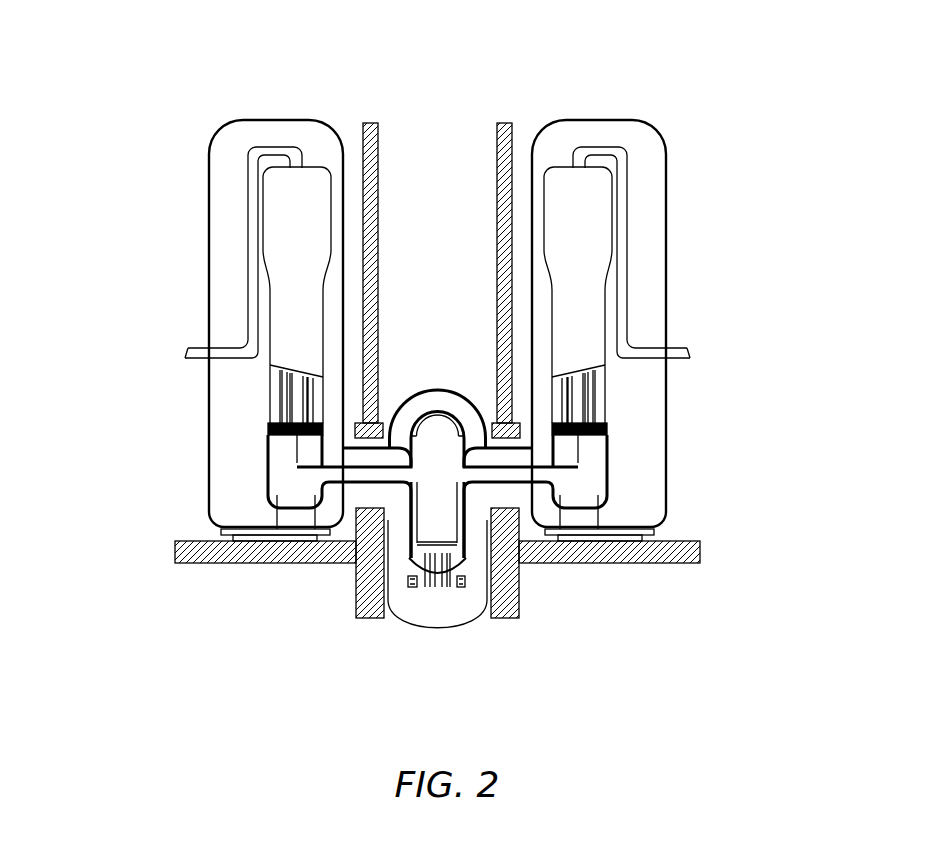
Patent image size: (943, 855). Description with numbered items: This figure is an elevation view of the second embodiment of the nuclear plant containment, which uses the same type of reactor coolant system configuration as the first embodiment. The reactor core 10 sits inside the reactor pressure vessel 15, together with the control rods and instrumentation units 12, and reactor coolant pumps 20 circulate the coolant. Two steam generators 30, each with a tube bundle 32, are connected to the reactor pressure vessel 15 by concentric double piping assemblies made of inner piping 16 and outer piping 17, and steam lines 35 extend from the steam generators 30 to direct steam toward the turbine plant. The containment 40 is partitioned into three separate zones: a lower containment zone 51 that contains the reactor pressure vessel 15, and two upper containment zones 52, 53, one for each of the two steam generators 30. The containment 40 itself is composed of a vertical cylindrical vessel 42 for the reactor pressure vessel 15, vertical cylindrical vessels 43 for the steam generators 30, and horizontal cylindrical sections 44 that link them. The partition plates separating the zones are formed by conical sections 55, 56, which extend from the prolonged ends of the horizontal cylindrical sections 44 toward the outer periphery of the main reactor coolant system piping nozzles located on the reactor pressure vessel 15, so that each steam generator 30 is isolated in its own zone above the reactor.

The reactor core 10 is at (430, 522).
The control rods and instrumentation units 12 is at (430, 585).
The reactor pressure vessel 15 is at (540, 483).
The inner piping 16 is at (467, 485).
The outer piping 17 is at (465, 520).
The reactor coolant pumps 20 is at (408, 582).
The steam generator 30 is at (270, 432).
The tube bundle 32 is at (287, 387).
The steam line 35 is at (252, 248).
The containment 40 is at (648, 130).
The cylindrical vessel 42 is at (390, 572).
The cylindrical vessel 43 is at (345, 170).
The horizontal cylindrical sections 44 is at (377, 447).
The lower containment zone 51 is at (483, 600).
The upper containment zone 52 is at (230, 175).
The upper containment zone 53 is at (648, 190).
The partition plate 55 is at (402, 492).
The partition plate 56 is at (563, 483).